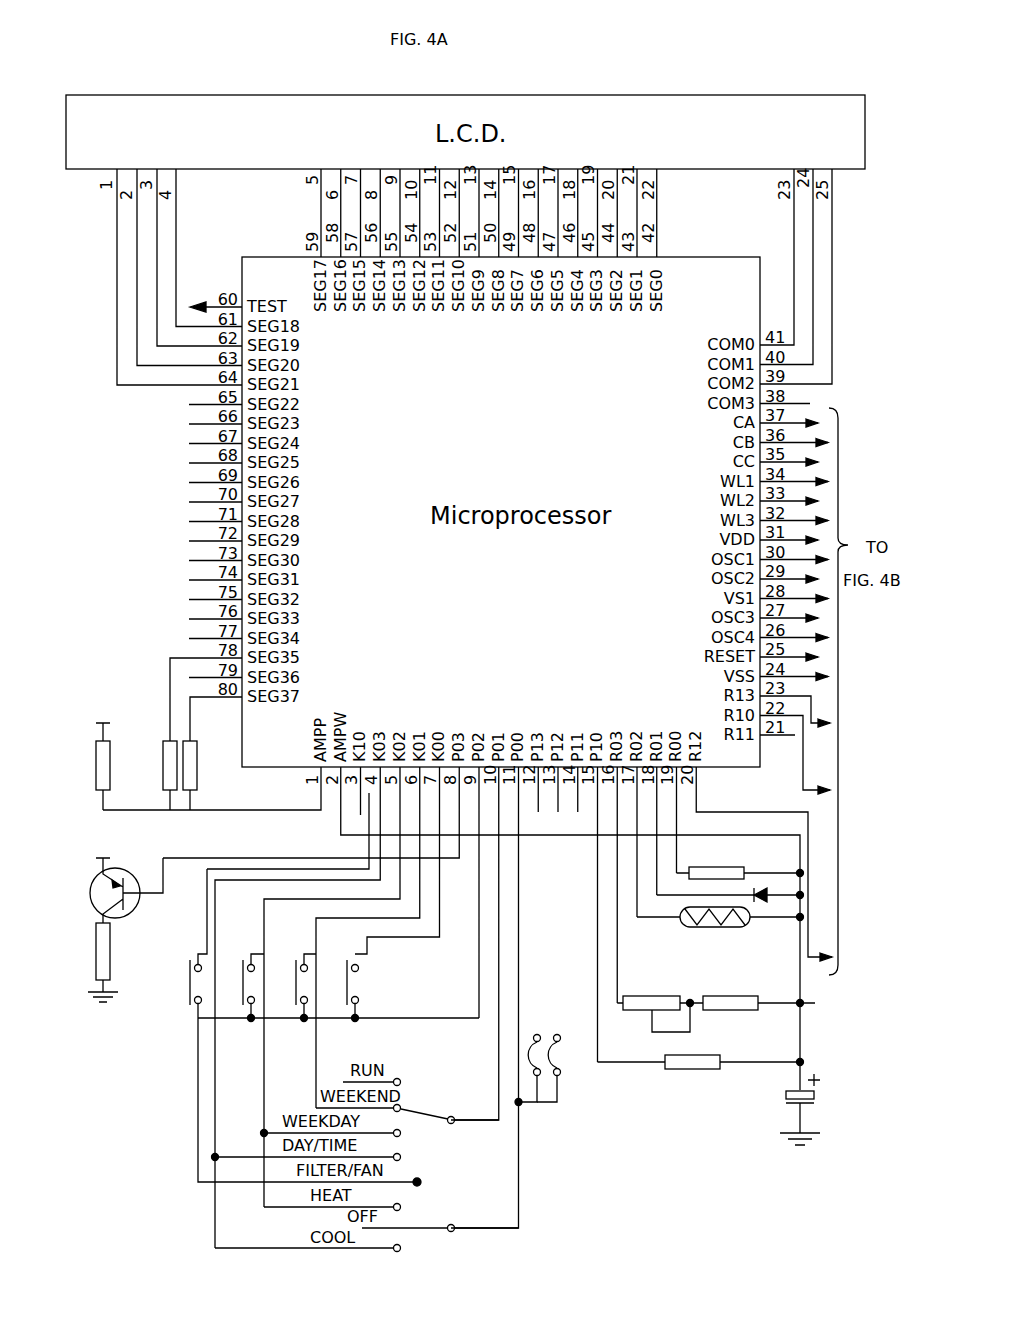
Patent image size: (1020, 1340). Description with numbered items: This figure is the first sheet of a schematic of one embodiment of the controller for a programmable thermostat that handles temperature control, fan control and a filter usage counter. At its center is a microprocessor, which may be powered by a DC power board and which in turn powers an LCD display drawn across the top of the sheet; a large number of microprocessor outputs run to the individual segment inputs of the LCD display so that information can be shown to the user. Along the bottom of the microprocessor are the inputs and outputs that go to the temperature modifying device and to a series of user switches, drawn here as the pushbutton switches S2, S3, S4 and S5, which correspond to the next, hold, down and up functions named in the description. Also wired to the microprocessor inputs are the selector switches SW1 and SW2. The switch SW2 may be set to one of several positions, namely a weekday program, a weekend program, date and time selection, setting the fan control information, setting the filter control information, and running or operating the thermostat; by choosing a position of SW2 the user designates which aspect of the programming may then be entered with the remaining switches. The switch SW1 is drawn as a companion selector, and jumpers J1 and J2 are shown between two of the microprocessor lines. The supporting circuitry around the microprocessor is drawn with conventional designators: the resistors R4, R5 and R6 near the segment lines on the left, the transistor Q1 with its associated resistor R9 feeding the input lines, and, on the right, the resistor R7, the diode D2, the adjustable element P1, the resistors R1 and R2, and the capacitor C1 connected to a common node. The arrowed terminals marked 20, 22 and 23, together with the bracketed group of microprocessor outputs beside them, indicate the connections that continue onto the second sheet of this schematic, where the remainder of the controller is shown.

The resistor R4 56K 1% R4 is at (88, 756).
The resistor R5 22K 1% R5 is at (151, 775).
The resistor R6 22K R6 is at (206, 775).
The resistor R9 3.3K R9 is at (90, 962).
The transistor Q1 AB12 Q1 is at (149, 881).
The NEXT pushbutton switch S2 is at (191, 967).
The HOLD pushbutton switch S3 is at (244, 967).
The DOWN pushbutton switch S4 is at (297, 969).
The UP pushbutton switch S5 is at (348, 967).
The mode selector switch SW1 is at (483, 1218).
The switch SW2 is at (450, 1110).
The jumper J1 is at (532, 1059).
The jumper J2 is at (551, 1059).
The resistor R7 3.3K R7 is at (739, 862).
The diode D2 is at (728, 885).
The cermet potentiometer P1 3.3K with thermistor P1 is at (708, 969).
The resistor R1 48.5K 1% R1 is at (757, 1001).
The resistor R2 1.8K R2 is at (699, 1072).
The capacitor C1 4.7 microfarad C1 is at (787, 1111).
The connection to FIG. 4B (R12) 20 is at (765, 864).
The connection to FIG. 4B (R10) 22 is at (796, 755).
The connection to FIG. 4B (R13) 23 is at (798, 711).